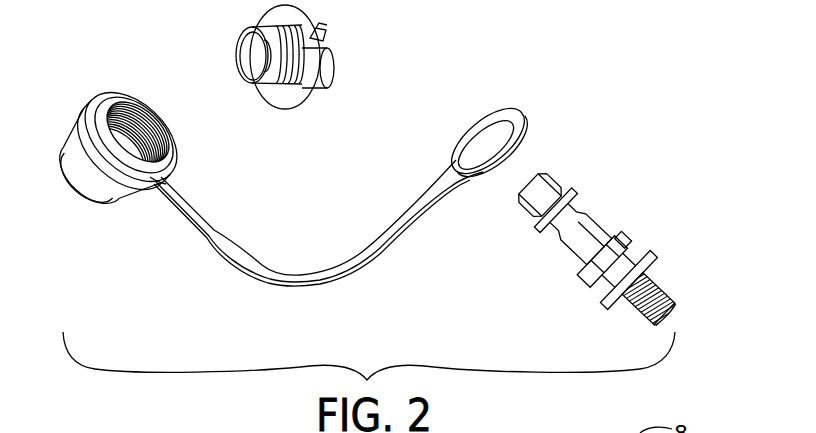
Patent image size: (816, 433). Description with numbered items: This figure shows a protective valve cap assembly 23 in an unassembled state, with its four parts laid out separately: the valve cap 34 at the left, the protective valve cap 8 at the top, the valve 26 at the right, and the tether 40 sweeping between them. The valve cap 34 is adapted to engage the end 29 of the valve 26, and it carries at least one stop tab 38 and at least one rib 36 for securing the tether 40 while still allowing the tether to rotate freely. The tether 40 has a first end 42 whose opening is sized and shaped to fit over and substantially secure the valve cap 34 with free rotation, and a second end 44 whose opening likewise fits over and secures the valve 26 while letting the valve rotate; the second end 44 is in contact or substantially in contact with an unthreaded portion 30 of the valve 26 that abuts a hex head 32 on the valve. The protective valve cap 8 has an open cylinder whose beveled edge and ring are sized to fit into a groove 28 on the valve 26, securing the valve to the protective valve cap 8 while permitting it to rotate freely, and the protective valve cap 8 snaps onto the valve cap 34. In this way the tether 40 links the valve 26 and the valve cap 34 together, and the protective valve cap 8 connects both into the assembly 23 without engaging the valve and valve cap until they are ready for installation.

The protective valve cap 8 is at (270, 110).
The protective valve cap assembly 23 is at (470, 48).
The valve 26 is at (606, 245).
The groove 28 is at (578, 232).
The end of the valve 29 is at (540, 194).
The unthreaded portion 30 is at (572, 260).
The hex head 32 is at (636, 232).
The valve cap 34 is at (63, 182).
The rib 36 is at (114, 122).
The stop tab 38 is at (106, 98).
The tether 40 is at (325, 201).
The first end of the tether 42 is at (148, 185).
The second end of the tether 44 is at (473, 183).